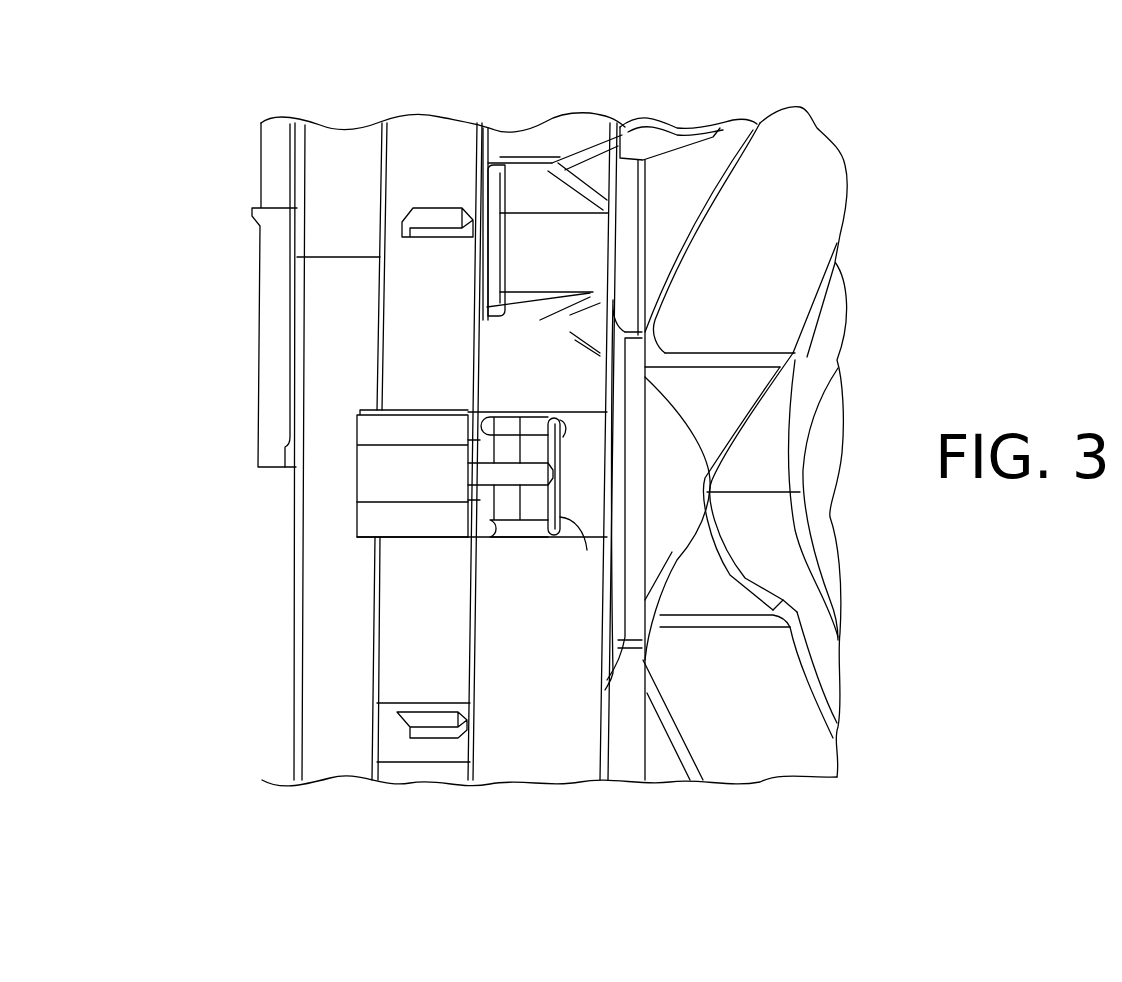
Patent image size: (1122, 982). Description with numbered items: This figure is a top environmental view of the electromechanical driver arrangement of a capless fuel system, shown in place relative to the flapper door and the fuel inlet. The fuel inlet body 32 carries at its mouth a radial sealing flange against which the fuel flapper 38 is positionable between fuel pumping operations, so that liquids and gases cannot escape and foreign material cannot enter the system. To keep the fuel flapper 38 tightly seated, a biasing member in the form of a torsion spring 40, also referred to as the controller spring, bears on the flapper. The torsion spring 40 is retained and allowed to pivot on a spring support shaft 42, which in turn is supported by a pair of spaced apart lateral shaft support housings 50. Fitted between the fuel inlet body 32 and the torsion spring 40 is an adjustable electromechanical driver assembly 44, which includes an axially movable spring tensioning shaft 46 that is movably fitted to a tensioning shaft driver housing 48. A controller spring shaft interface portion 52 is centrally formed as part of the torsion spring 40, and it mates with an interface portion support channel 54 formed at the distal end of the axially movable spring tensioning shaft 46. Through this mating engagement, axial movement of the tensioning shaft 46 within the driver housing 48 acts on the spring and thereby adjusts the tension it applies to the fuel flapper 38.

The fuel inlet body 32 is at (563, 143).
The fuel flapper 38 is at (605, 468).
The torsion spring 40 is at (533, 540).
The spring support shaft 42 is at (500, 440).
The adjustable electromechanical driver assembly 44 is at (378, 470).
The axially movable spring tensioning shaft 46 is at (516, 478).
The tensioning shaft driver housing 48 is at (412, 527).
The lateral shaft support housing 50 is at (495, 373).
The controller spring shaft interface portion 52 is at (580, 533).
The interface portion support channel 54 is at (543, 427).